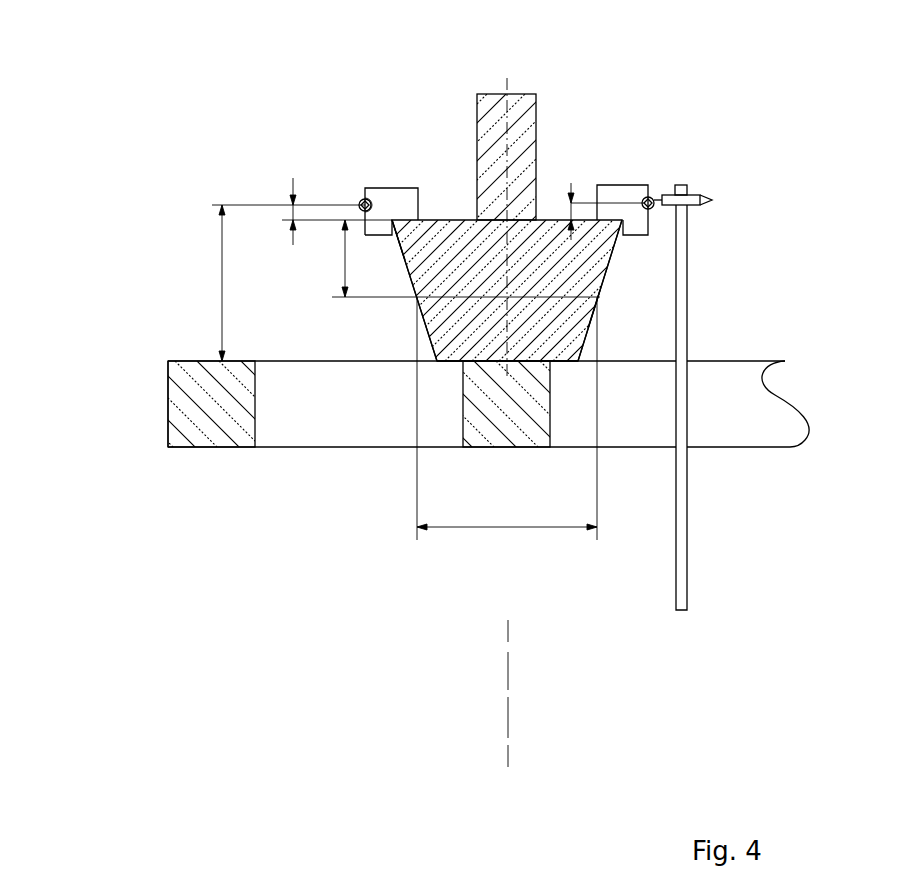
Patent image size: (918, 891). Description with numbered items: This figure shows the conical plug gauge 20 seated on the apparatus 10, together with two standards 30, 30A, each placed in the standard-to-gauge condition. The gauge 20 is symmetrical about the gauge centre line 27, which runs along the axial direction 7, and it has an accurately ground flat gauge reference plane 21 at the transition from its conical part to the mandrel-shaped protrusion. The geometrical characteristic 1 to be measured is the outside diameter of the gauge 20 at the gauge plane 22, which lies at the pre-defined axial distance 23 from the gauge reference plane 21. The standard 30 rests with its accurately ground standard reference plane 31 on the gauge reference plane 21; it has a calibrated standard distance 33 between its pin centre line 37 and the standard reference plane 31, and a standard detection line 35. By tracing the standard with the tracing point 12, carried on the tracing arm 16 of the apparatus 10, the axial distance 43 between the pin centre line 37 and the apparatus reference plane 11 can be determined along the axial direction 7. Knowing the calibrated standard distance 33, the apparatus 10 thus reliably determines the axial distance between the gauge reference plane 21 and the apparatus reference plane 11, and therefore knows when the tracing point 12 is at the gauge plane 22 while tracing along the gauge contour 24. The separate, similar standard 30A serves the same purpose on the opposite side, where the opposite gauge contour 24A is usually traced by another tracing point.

The geometrical characteristic of gauge 1 is at (510, 530).
The axial direction 7 is at (508, 692).
The apparatus 10 is at (147, 407).
The apparatus reference plane 11 is at (188, 372).
The tracing point 12 is at (652, 198).
The tracing arm 16 is at (690, 552).
The gauge 20 is at (575, 92).
The gauge reference plane 21 is at (481, 358).
The gauge plane 22 is at (603, 278).
The pre-defined axial distance between gauge plane and gauge reference plane 23 is at (345, 250).
The gauge contour 24 is at (417, 287).
The gauge contour 24A is at (592, 323).
The gauge centre line 27 is at (505, 150).
The standard 30 is at (385, 160).
The standard 30A is at (612, 163).
The standard reference plane 31 is at (400, 222).
The calibrated standard distance 33 is at (293, 200).
The standard detection line 35 is at (361, 205).
The pin centre line 37 is at (360, 198).
The axial distance between pin centre line and apparatus reference plane 43 is at (222, 262).